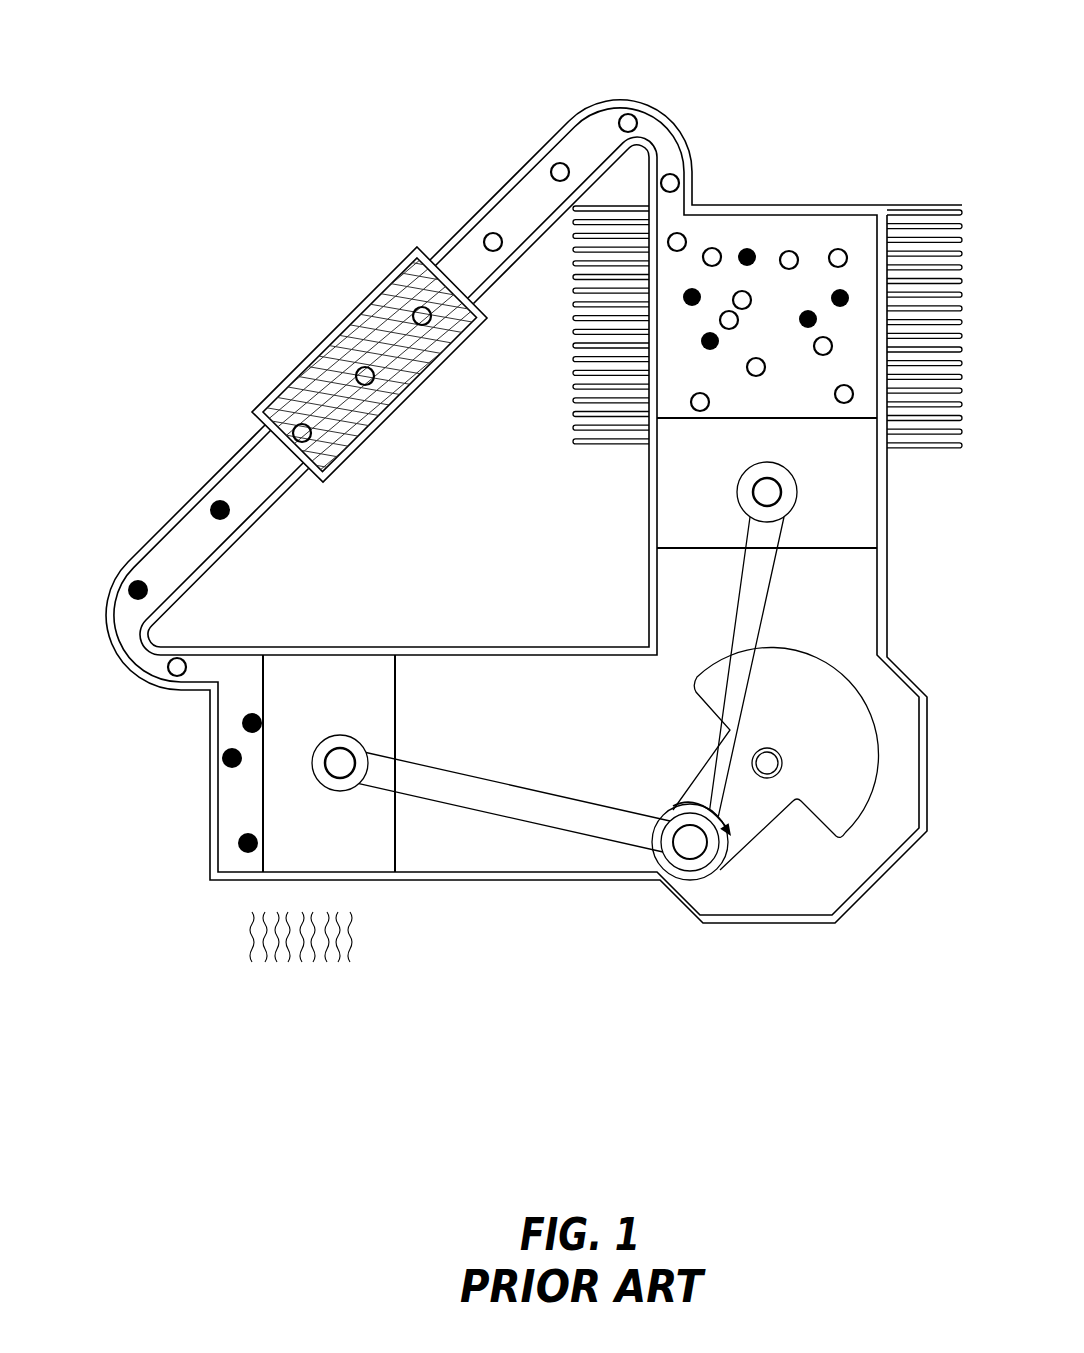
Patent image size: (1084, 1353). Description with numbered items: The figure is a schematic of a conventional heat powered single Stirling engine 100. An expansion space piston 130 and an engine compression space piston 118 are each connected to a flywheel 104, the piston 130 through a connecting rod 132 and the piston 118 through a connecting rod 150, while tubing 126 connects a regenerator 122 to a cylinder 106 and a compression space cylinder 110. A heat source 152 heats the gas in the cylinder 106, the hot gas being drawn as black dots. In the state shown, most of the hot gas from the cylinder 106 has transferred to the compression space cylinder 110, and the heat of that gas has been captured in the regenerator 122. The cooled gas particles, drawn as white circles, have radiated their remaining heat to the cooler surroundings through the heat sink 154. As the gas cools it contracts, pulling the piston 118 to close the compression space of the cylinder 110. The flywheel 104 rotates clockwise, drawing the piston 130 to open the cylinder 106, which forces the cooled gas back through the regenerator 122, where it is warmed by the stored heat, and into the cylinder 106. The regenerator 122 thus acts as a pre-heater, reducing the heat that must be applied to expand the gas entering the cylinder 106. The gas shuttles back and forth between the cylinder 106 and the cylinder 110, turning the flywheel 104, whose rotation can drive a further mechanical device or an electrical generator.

The single Stirling engine 100 is at (501, 467).
The flywheel 104 is at (765, 763).
The cylinder 106 is at (210, 720).
The compression space cylinder 110 is at (760, 322).
The engine compression space piston 118 is at (785, 479).
The regenerator 122 is at (367, 297).
The tubing 126 is at (208, 493).
The expansion space piston 130 is at (351, 763).
The connecting rod 132 is at (542, 778).
The connecting rod 150 is at (762, 602).
The heat source 152 is at (329, 937).
The heat sink 154 is at (924, 311).